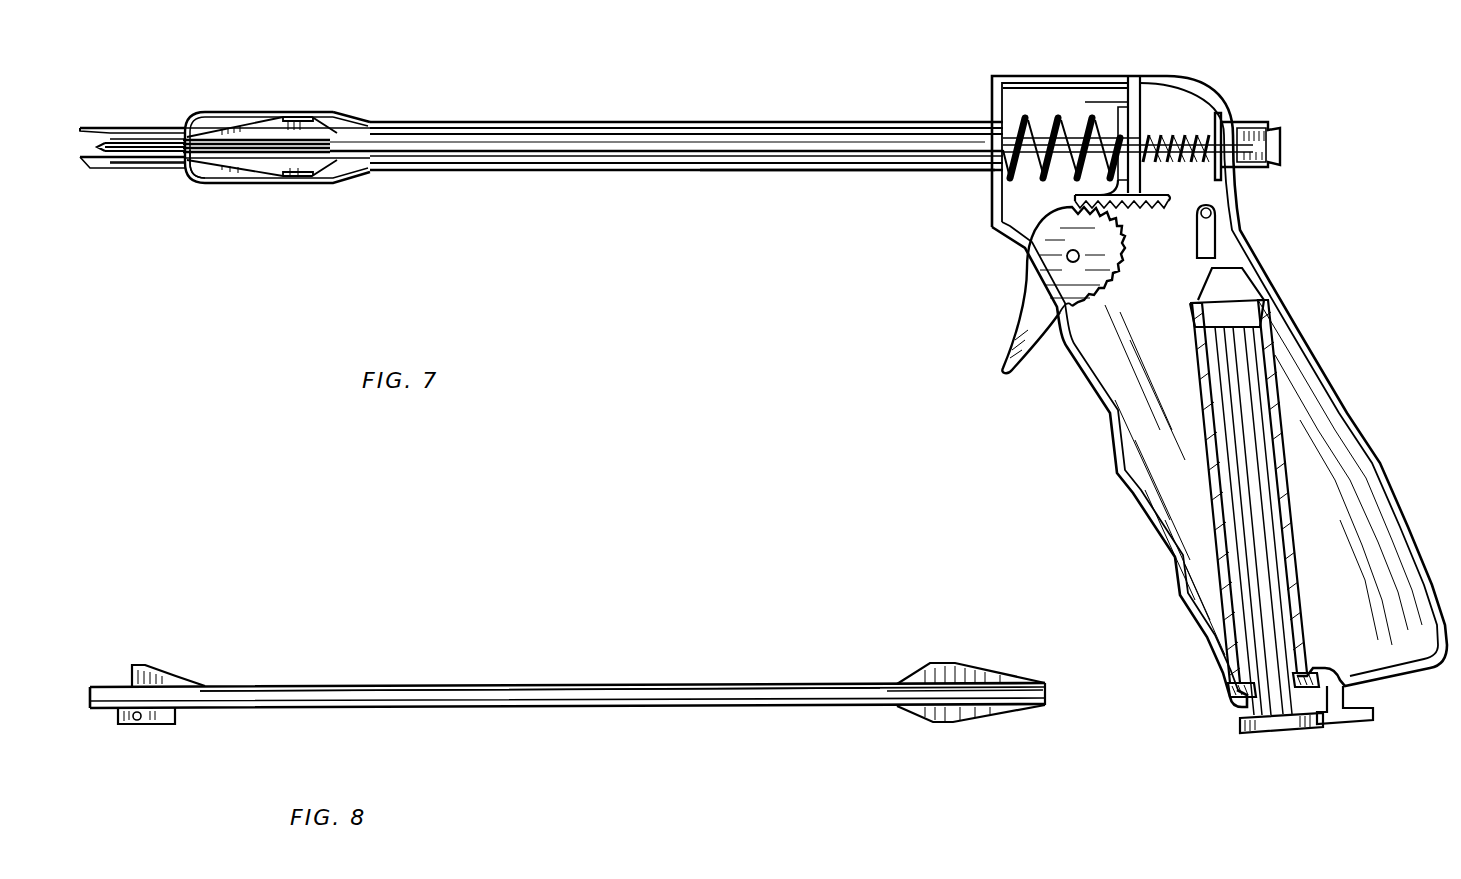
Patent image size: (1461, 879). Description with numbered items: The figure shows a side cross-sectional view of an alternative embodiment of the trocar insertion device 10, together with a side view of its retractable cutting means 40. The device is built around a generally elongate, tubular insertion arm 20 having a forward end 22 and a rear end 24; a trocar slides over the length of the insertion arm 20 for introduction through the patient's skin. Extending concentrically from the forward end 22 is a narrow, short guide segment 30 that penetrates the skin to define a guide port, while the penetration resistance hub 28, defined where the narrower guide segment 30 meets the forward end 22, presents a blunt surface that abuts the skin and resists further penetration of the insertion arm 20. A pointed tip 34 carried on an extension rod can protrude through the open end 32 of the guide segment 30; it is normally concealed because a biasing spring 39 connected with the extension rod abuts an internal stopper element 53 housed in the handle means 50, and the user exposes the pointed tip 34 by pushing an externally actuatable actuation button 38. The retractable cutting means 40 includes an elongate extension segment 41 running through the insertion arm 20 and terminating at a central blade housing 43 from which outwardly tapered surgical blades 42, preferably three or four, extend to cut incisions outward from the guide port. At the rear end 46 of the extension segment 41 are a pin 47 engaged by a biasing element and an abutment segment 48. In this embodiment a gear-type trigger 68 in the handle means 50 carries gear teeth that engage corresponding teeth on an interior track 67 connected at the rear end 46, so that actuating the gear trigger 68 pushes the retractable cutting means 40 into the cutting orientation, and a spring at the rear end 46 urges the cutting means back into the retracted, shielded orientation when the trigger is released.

In FIG. 7, the trocar insertion device 10 is at (800, 282).
In FIG. 7, the insertion arm 20 is at (706, 120).
In FIG. 7, the forward end 22 is at (237, 186).
In FIG. 7, the rear end 24 is at (957, 174).
In FIG. 7, the penetration resistance hub 28 is at (186, 181).
In FIG. 7, the guide segment 30 is at (149, 126).
In FIG. 7, the open end 32 is at (85, 146).
In FIG. 7, the pointed tip 34 is at (126, 153).
In FIG. 7, the actuation button 38 is at (1280, 133).
In FIG. 7, the biasing spring 39 is at (1184, 136).
In FIG. 7, the retractable cutting means 40 is at (590, 137).
In FIG. 8, the retractable cutting means 40 is at (510, 682).
In FIG. 7, the elongate extension segment 41 is at (863, 142).
In FIG. 8, the elongate extension segment 41 is at (560, 706).
In FIG. 7, the surgical blades 42 is at (312, 132).
In FIG. 8, the surgical blades 42 is at (990, 690).
In FIG. 7, the central blade housing 43 is at (280, 138).
In FIG. 8, the rear end 46 is at (170, 700).
In FIG. 8, the pin 47 is at (140, 721).
In FIG. 8, the abutment segment 48 is at (130, 665).
In FIG. 7, the handle means 50 is at (1302, 326).
In FIG. 7, the internal stopper element 53 is at (1152, 96).
In FIG. 7, the interior track 67 is at (1151, 209).
In FIG. 7, the gear-type trigger 68 is at (1045, 270).